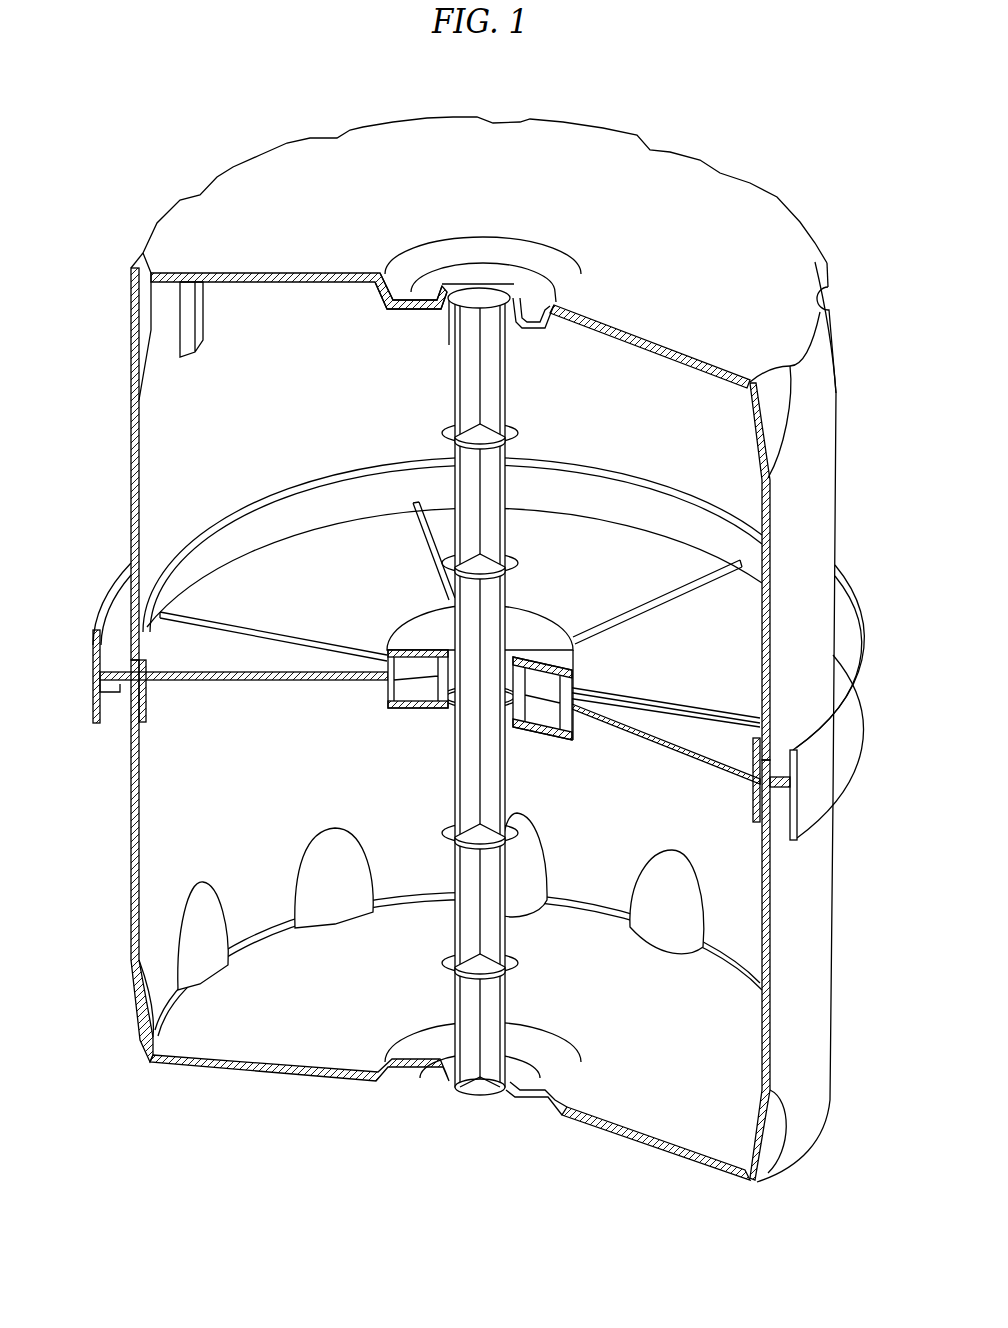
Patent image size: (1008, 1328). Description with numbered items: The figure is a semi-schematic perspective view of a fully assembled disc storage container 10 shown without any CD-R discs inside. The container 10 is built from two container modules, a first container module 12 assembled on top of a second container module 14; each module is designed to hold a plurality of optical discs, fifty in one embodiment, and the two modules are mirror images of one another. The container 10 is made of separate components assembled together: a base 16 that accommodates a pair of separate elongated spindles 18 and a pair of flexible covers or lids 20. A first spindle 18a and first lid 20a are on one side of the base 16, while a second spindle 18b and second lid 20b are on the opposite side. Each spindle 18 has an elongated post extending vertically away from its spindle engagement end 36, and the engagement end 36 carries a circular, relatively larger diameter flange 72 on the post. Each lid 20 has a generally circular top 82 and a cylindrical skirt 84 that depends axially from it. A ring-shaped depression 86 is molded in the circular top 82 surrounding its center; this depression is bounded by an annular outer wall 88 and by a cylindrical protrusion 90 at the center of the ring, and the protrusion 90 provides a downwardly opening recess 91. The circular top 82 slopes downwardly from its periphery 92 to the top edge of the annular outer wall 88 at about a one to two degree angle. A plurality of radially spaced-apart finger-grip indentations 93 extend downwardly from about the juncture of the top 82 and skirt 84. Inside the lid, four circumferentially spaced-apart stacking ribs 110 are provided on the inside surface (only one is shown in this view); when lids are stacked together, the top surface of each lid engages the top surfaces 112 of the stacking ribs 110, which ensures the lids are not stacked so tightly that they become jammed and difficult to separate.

The disc storage container 10 is at (165, 193).
The first container module 12 is at (133, 432).
The second container module 14 is at (131, 874).
The base 16 is at (842, 748).
The spindle 18 is at (452, 398).
The first spindle 18a is at (508, 500).
The second spindle 18b is at (497, 915).
The lid 20 is at (815, 487).
The first lid 20a is at (828, 547).
The second lid 20b is at (826, 1007).
The spindle engagement end 36 is at (470, 705).
The flange 72 is at (515, 615).
The circular top 82 is at (708, 304).
The cylindrical skirt 84 is at (812, 420).
The ring-shaped depression 86 is at (540, 272).
The annular outer wall 88 is at (557, 285).
The cylindrical protrusion 90 is at (462, 272).
The downwardly opening recess 91 is at (512, 328).
The periphery 92 is at (824, 258).
The finger-grip indentations 93 is at (819, 300).
The stacking ribs 110 is at (427, 308).
The top surfaces 112 is at (197, 355).